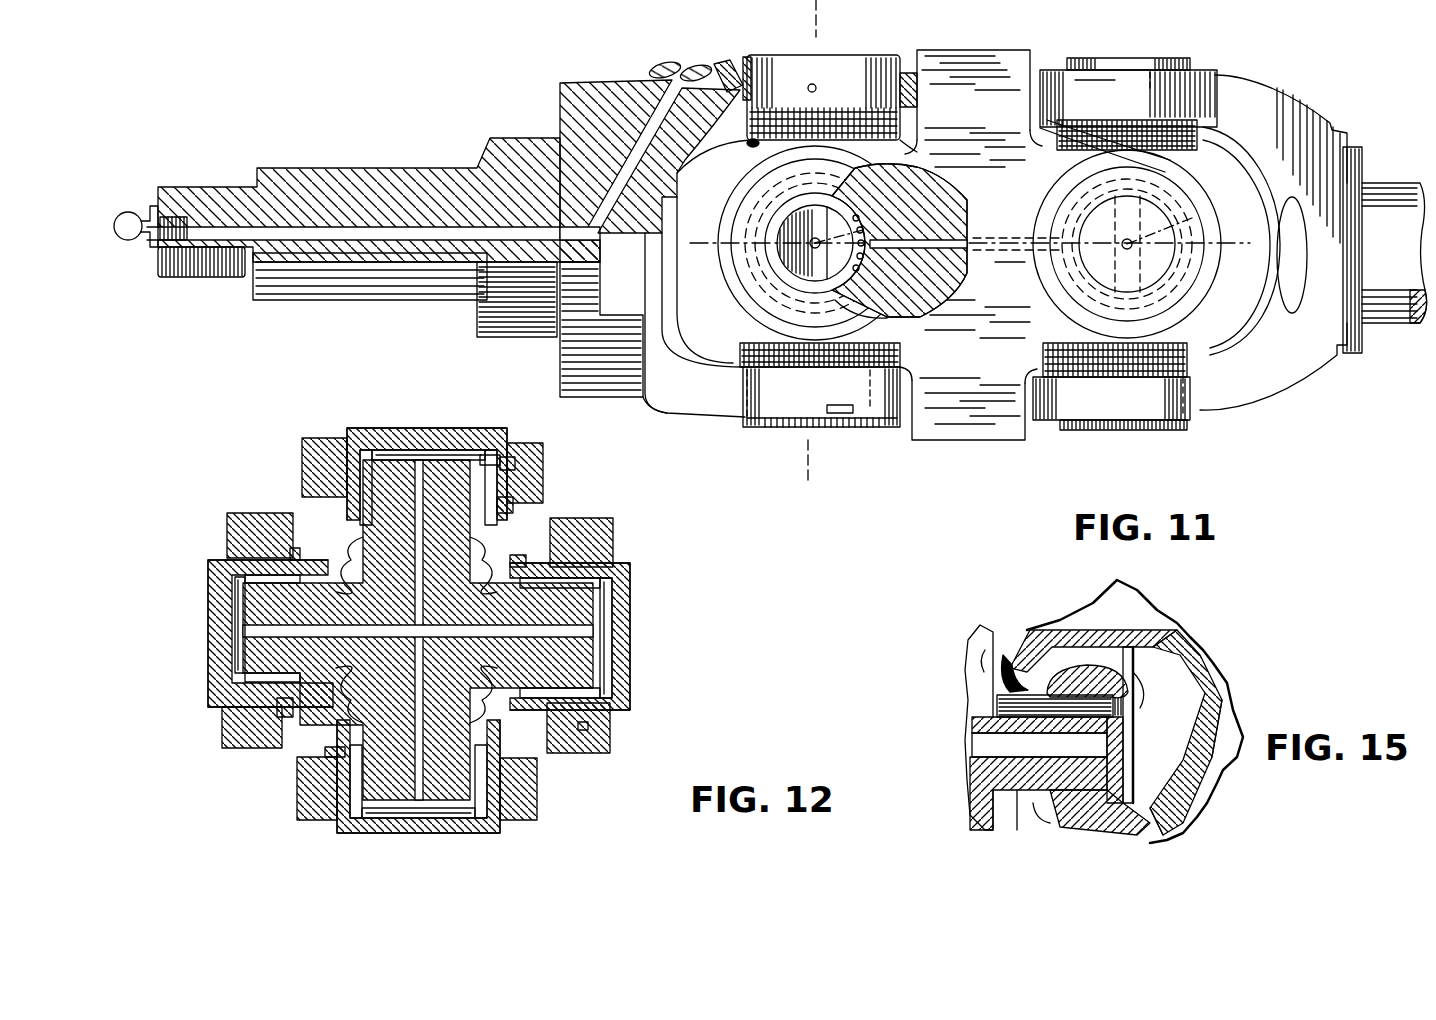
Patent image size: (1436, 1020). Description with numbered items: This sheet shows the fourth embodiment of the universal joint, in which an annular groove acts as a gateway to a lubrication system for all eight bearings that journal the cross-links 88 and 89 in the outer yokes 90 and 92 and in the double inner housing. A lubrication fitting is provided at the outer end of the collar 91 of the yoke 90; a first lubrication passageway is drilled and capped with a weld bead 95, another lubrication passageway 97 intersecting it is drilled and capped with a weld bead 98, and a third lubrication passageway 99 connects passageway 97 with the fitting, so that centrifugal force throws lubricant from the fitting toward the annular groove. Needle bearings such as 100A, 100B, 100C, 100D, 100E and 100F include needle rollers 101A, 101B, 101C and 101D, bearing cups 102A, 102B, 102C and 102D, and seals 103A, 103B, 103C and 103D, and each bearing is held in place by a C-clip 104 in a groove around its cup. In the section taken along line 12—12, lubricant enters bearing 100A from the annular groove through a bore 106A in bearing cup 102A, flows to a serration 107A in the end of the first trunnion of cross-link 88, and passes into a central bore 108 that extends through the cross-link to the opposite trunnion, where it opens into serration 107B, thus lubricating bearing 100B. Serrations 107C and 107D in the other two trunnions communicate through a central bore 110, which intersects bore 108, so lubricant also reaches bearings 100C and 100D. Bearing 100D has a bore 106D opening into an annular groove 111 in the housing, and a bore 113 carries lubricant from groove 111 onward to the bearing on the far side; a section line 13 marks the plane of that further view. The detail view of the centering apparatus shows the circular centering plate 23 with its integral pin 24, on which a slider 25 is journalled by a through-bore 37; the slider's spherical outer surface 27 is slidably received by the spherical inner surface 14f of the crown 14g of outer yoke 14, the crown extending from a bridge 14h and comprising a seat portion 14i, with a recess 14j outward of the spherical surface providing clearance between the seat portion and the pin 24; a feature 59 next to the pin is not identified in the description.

In FIG. 11, the third lubrication passageway 99 is at (353, 230).
In FIG. 11, the collar 91 is at (317, 300).
In FIG. 11, the lubrication passageway 97 is at (660, 90).
In FIG. 11, the weld bead 95 is at (658, 66).
In FIG. 11, the weld bead 98 is at (703, 70).
In FIG. 11, the needle bearing 100A is at (841, 55).
In FIG. 12, the needle bearing 100A is at (398, 424).
In FIG. 11, the bore 106A is at (812, 84).
In FIG. 12, the bore 106A is at (488, 458).
In FIG. 11, the needle bearing 100E is at (1143, 58).
In FIG. 11, the outer yoke 92 is at (1273, 90).
In FIG. 11, the cross-link 88 is at (747, 148).
In FIG. 12, the cross-link 88 is at (346, 553).
In FIG. 11, the cross-link 89 is at (1178, 168).
In FIG. 11, the needle bearing 100D is at (860, 180).
In FIG. 12, the needle bearing 100D is at (640, 588).
In FIG. 11, the bore 106D is at (882, 212).
In FIG. 11, the serration 107D is at (803, 232).
In FIG. 12, the serration 107D is at (600, 666).
In FIG. 11, the central bore 110 is at (811, 241).
In FIG. 12, the central bore 110 is at (590, 631).
In FIG. 11, the bore 113 is at (963, 240).
In FIG. 11, the needle rollers 101D is at (864, 254).
In FIG. 12, the needle rollers 101D is at (592, 588).
In FIG. 11, the annular groove 111 is at (877, 310).
In FIG. 12, the annular groove 111 is at (612, 726).
In FIG. 11, the section line 13 is at (683, 241).
In FIG. 11, the section line 12— 12 is at (808, 12).
In FIG. 11, the needle bearing 100B is at (846, 435).
In FIG. 12, the needle bearing 100B is at (505, 838).
In FIG. 11, the needle bearing 100F is at (1172, 437).
In FIG. 12, the central bore 108 is at (405, 808).
In FIG. 12, the bearing cup 102A is at (357, 430).
In FIG. 12, the serration 107A is at (432, 452).
In FIG. 12, the needle rollers 101A is at (365, 485).
In FIG. 12, the outer yoke 90 is at (541, 445).
In FIG. 12, the seal 103A is at (503, 520).
In FIG. 12, the seal 103D is at (525, 560).
In FIG. 12, the bearing cup 102D is at (615, 566).
In FIG. 12, the needle rollers 101B is at (503, 788).
In FIG. 12, the bearing cup 102B is at (340, 830).
In FIG. 12, the serration 107B is at (385, 812).
In FIG. 12, the seal 103B is at (340, 752).
In FIG. 12, the bearing cup 102C is at (212, 645).
In FIG. 12, the needle bearing 100C is at (204, 572).
In FIG. 12, the needle rollers 101C is at (257, 578).
In FIG. 12, the serration 107C is at (240, 612).
In FIG. 12, the seal 103C is at (285, 718).
In FIG. 12, the C-clip 104 is at (540, 732).
In FIG. 12, the outer yoke 14 is at (420, 377).
In FIG. 15, the centering plate 23 is at (978, 672).
In FIG. 15, the spherical inner surface 14f is at (1015, 683).
In FIG. 15, the bore 59 is at (998, 748).
In FIG. 15, the pin 24 is at (1017, 795).
In FIG. 15, the slider 25 is at (1047, 808).
In FIG. 15, the spherical outer surface 27 is at (1093, 827).
In FIG. 15, the through-bore 37 is at (1145, 708).
In FIG. 15, the bridge 14h is at (1143, 627).
In FIG. 15, the recess 14j is at (1183, 653).
In FIG. 15, the seat portion 14i is at (1210, 760).
In FIG. 15, the crown 14g is at (1170, 840).